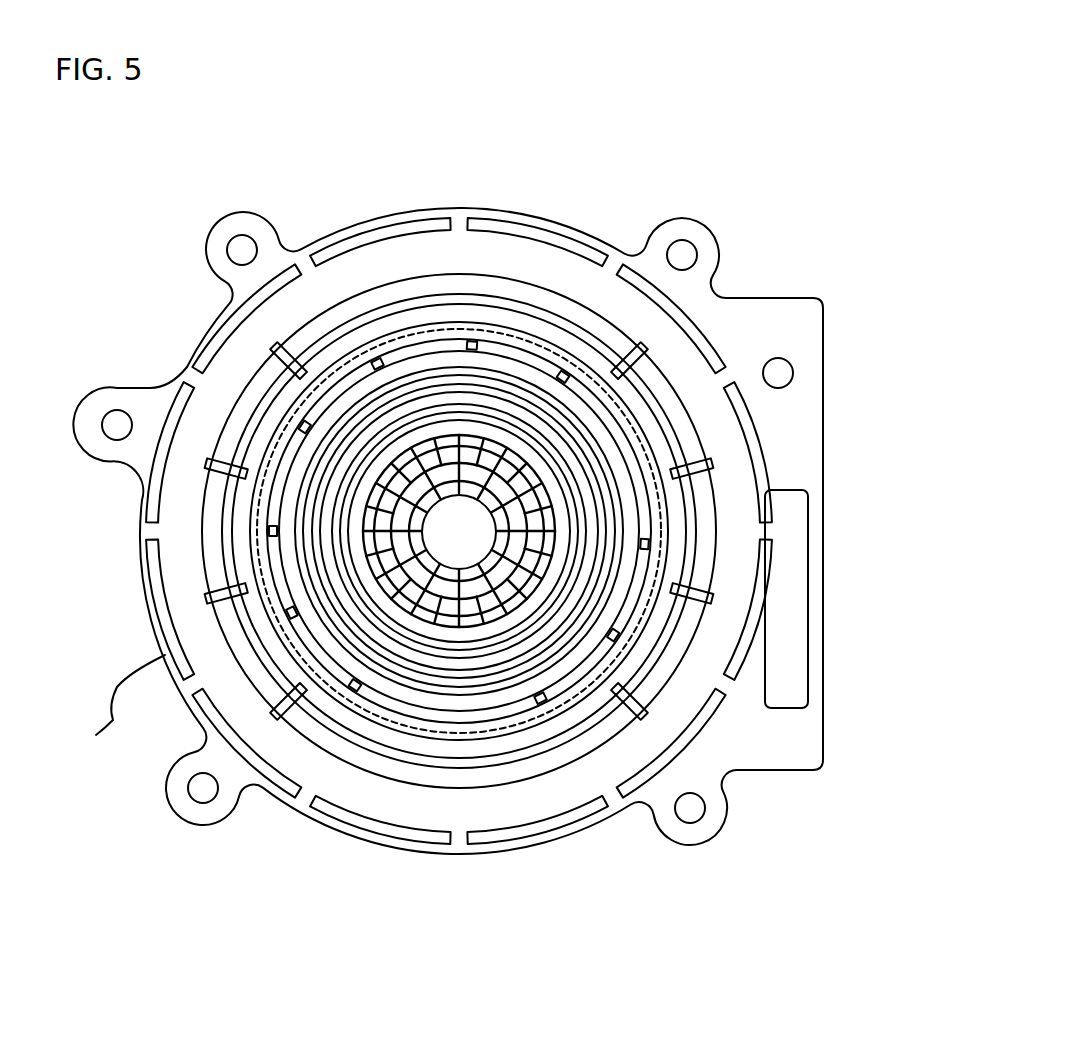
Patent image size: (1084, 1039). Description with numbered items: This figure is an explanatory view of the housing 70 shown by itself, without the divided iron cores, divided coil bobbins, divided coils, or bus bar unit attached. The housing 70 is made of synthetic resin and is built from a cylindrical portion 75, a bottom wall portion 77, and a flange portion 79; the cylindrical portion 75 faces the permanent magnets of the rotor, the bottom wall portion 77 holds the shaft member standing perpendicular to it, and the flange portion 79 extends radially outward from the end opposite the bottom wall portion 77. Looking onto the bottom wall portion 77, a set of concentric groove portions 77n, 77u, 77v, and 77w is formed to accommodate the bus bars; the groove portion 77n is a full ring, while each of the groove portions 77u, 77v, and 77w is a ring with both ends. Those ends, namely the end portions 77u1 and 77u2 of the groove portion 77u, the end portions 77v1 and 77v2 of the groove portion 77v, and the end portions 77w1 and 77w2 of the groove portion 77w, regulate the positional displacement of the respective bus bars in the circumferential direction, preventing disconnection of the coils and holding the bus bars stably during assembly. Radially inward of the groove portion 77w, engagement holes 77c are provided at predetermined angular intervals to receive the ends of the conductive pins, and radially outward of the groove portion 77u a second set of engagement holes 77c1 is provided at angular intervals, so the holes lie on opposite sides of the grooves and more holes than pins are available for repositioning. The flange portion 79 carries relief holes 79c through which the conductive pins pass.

The housing 70 is at (842, 342).
The cylindrical portion 75 is at (703, 742).
The bottom wall portion 77 is at (484, 551).
The engagement holes 77c is at (340, 562).
The engagement holes 77c1 is at (380, 587).
The groove portion 77n is at (330, 700).
The groove portion 77u is at (425, 690).
The groove portion 77v is at (488, 690).
The groove portion 77w is at (540, 700).
The end portion 77u1 is at (430, 372).
The end portion 77u2 is at (574, 410).
The end portion 77v1 is at (489, 405).
The end portion 77v2 is at (595, 500).
The end portion 77w1 is at (565, 462).
The end portion 77w2 is at (580, 562).
The flange portion 79 is at (713, 768).
The relief holes 79c is at (767, 687).